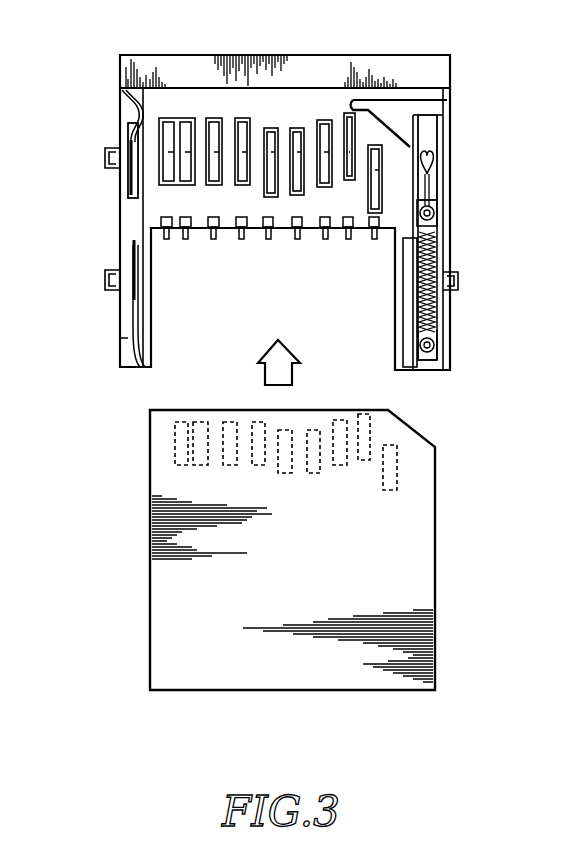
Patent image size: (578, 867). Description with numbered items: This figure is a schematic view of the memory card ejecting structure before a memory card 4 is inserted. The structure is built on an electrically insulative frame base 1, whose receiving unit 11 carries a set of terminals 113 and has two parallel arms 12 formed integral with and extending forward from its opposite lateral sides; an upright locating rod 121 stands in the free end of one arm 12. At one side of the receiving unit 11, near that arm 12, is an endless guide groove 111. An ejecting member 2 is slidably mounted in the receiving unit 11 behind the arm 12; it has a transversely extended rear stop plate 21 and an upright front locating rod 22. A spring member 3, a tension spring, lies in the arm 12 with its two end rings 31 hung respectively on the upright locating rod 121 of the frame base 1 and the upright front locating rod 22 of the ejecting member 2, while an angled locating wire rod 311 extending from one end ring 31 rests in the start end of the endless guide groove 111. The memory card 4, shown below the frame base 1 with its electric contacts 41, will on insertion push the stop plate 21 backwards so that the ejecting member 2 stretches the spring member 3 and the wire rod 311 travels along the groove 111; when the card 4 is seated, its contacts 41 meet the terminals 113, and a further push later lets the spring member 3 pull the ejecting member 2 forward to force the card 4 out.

The electrically insulative frame base 1 is at (287, 192).
The receiving unit 11 is at (255, 208).
The endless guide groove 111 is at (432, 143).
The terminals 113 is at (185, 240).
The arm 12 is at (437, 362).
The upright locating rod 121 is at (422, 345).
The ejecting member 2 is at (434, 90).
The transversely extended rear stop plate 21 is at (360, 100).
The upright front locating rod 22 is at (432, 213).
The spring member 3 is at (437, 298).
The end ring 31 is at (438, 229).
The locating wire rod 311 is at (440, 157).
The memory card 4 is at (260, 550).
The electric contacts 41 is at (178, 445).